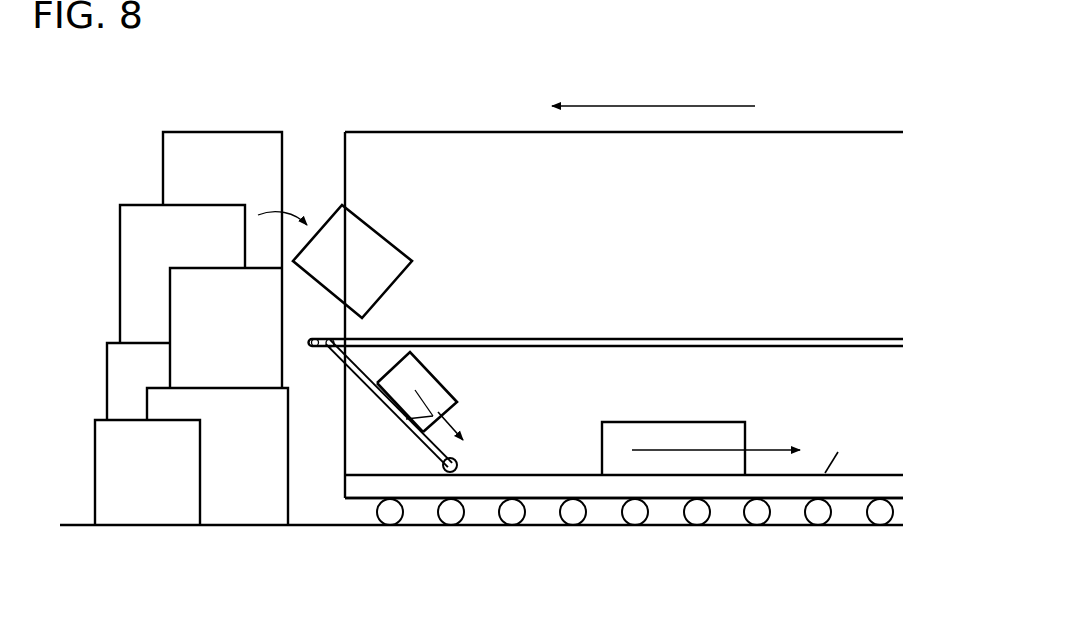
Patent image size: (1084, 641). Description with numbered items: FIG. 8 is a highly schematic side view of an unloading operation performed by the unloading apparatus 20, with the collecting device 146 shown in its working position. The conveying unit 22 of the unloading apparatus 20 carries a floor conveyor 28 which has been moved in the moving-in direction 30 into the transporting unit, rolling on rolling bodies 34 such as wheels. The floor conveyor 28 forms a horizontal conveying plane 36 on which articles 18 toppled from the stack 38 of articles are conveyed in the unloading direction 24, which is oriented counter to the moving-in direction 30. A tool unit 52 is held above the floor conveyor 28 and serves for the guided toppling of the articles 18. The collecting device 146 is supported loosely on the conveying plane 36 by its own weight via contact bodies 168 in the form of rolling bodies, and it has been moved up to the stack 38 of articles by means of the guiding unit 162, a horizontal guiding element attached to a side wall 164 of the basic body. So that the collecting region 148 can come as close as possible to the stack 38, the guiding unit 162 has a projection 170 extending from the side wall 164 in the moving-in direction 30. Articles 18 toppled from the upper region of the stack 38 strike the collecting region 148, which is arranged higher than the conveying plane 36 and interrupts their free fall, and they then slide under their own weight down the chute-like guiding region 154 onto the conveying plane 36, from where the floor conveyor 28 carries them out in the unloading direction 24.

The articles 18 is at (172, 162).
The unloading apparatus 20 is at (833, 95).
The conveying unit 22 is at (877, 472).
The unloading direction 24 is at (765, 447).
The floor conveyor 28 is at (530, 480).
The moving-in direction 30 is at (660, 106).
The rolling bodies 34 is at (575, 515).
The conveying plane 36 is at (827, 473).
The stack of articles 38 is at (218, 125).
The tool unit 52 is at (722, 340).
The collecting device 146 is at (388, 415).
The collecting region 148 is at (347, 343).
The guiding region 154 is at (418, 392).
The guiding unit 162 is at (558, 345).
The side wall 164 is at (850, 460).
The contact bodies 168 is at (458, 474).
The projection 170 is at (310, 342).